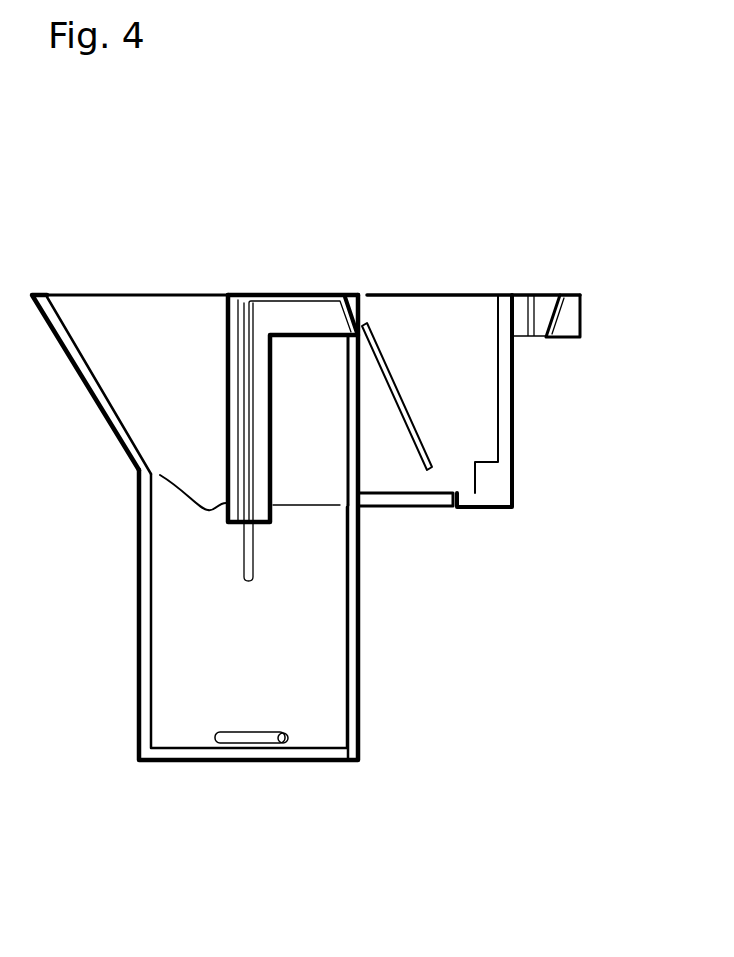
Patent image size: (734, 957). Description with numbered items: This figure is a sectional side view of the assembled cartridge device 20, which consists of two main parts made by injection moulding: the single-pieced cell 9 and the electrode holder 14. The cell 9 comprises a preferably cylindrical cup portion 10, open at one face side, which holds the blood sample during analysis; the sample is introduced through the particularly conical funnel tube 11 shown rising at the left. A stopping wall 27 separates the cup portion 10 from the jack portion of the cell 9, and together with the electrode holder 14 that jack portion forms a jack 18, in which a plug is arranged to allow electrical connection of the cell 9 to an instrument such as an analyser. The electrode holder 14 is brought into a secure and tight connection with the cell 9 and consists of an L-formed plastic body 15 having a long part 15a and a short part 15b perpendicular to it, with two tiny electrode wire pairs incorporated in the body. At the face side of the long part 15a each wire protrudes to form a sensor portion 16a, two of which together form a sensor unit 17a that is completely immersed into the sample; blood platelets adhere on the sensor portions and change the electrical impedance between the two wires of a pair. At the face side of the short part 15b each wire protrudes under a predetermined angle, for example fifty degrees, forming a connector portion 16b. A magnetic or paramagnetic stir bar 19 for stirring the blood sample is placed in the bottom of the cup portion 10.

The cell 9 is at (120, 710).
The cup portion 10 is at (263, 658).
The funnel tube 11 is at (118, 330).
The electrode holder 14 is at (237, 278).
The plastic body 15 is at (212, 342).
The long part 15a is at (238, 414).
The short part 15b is at (293, 323).
The sensor portion 16a is at (212, 556).
The connector portion 16b is at (412, 398).
The sensor unit 17a is at (260, 572).
The jack 18 is at (427, 278).
The stir bar 19 is at (253, 740).
The cartridge device 20 is at (545, 522).
The stopping wall 27 is at (353, 438).